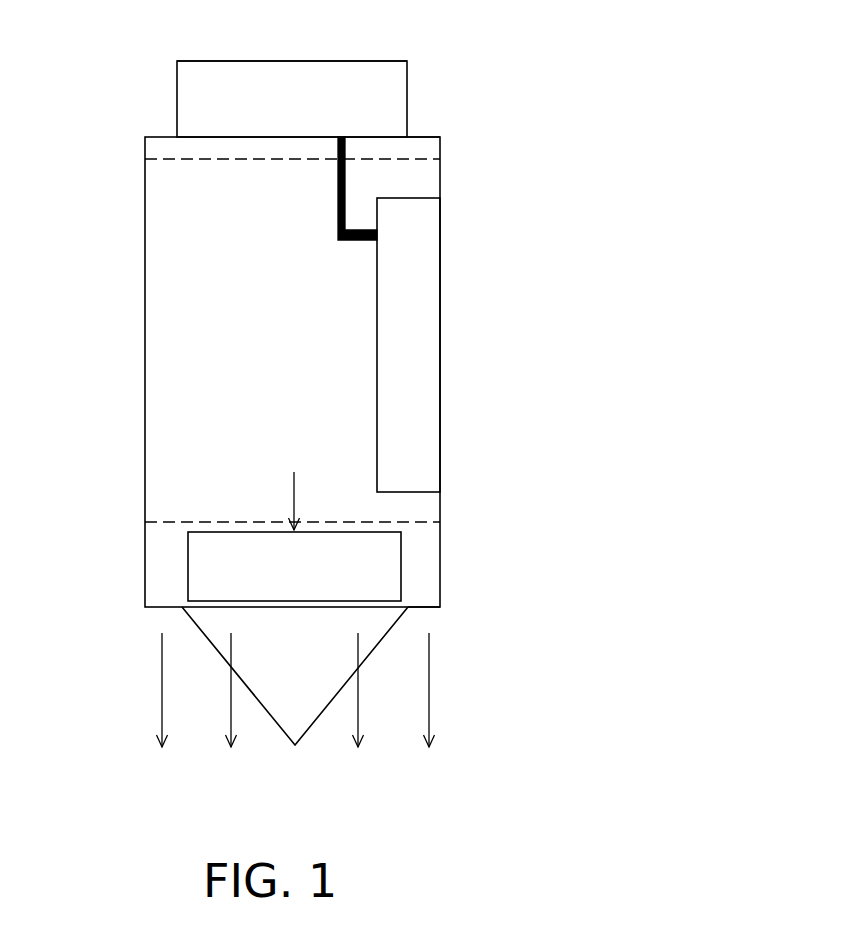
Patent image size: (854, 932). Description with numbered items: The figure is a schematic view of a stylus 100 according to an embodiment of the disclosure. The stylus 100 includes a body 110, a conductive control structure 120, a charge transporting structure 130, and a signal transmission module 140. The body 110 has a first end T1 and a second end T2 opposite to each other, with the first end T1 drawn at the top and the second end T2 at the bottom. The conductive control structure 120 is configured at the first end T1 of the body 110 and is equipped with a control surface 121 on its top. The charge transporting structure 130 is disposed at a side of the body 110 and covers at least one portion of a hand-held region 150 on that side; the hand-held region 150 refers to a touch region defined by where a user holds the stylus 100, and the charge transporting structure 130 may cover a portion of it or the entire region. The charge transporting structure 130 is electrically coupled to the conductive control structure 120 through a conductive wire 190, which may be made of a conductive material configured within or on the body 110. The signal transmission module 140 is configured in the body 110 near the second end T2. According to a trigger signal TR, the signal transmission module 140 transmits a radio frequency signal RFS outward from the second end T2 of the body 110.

The stylus 100 is at (528, 799).
The body 110 is at (145, 203).
The conductive control structure 120 is at (397, 80).
The control surface 121 is at (364, 60).
The charge transporting structure 130 is at (425, 309).
The signal transmission module 140 is at (401, 565).
The hand-held region 150 is at (405, 175).
The conductive wire 190 is at (338, 228).
The first end T1 is at (425, 136).
The second end T2 is at (436, 609).
The trigger signal TR is at (292, 486).
The radio frequency signal RFS is at (296, 703).